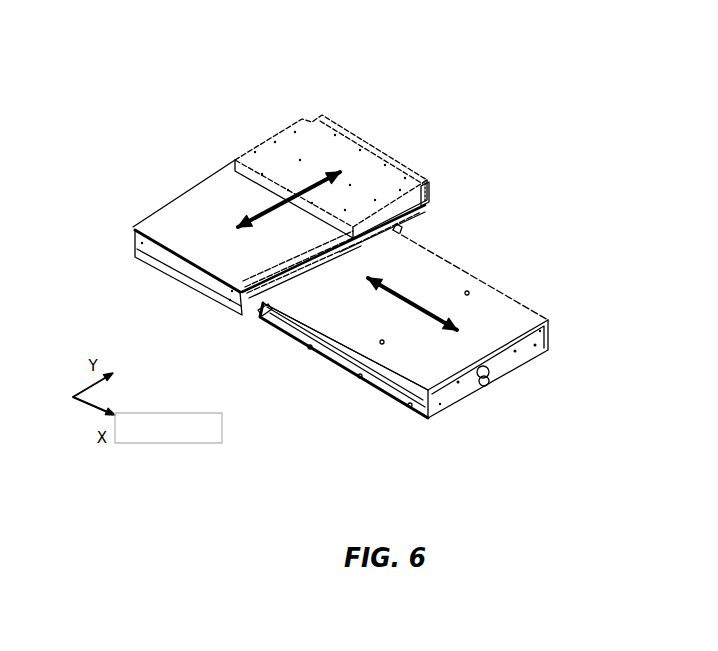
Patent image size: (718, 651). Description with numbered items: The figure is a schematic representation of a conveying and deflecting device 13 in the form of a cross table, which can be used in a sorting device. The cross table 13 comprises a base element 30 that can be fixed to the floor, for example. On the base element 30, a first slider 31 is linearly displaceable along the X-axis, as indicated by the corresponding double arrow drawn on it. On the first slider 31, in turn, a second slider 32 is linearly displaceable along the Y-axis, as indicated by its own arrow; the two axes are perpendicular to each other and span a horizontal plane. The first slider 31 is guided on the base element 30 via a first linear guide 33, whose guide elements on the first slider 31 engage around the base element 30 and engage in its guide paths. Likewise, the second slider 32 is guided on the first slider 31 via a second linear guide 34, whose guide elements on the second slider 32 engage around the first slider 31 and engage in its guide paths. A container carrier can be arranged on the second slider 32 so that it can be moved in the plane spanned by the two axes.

The conveying and deflecting device 13 is at (620, 202).
The base element 30 is at (507, 317).
The first slider 31 is at (193, 212).
The second slider 32 is at (302, 148).
The first linear guide 33 is at (258, 322).
The second linear guide 34 is at (427, 210).